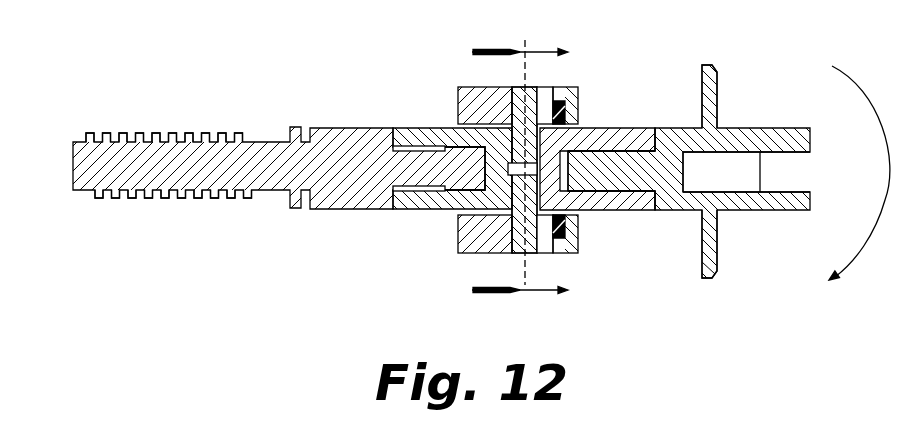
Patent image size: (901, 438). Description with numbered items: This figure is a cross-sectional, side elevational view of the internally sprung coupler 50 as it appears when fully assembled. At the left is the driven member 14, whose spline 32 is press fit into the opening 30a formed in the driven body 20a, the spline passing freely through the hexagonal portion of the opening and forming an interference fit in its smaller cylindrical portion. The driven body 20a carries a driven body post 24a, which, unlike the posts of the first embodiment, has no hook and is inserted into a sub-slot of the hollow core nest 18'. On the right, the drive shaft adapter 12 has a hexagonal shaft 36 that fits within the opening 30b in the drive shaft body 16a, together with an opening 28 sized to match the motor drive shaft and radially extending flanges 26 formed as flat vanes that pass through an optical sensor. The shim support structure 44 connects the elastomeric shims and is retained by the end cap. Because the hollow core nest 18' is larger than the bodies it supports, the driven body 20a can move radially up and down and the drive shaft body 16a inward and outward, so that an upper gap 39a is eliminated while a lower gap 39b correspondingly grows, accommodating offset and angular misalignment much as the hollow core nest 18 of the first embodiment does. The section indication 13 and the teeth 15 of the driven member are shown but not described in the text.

The drive shaft adapter 12 is at (731, 128).
The section line 13- 13 is at (538, 173).
The driven member 14 is at (332, 212).
The splines/teeth 15 is at (141, 133).
The drive shaft body 16a is at (601, 212).
The hollow core nest 18' is at (487, 158).
The hollow core nest 18 is at (524, 170).
The driven body 20a is at (418, 147).
The driven body post 24a is at (528, 95).
The radially extending flange 26 is at (702, 81).
The opening 28 is at (787, 174).
The opening 30a is at (447, 147).
The opening 30b is at (566, 162).
The spline 32 is at (462, 186).
The hexagonal shaft 36 is at (636, 195).
The upper gap 39a is at (467, 127).
The lower gap 39b is at (458, 215).
The shim support structure 44 is at (572, 105).
The internally sprung coupler 50 is at (252, 274).